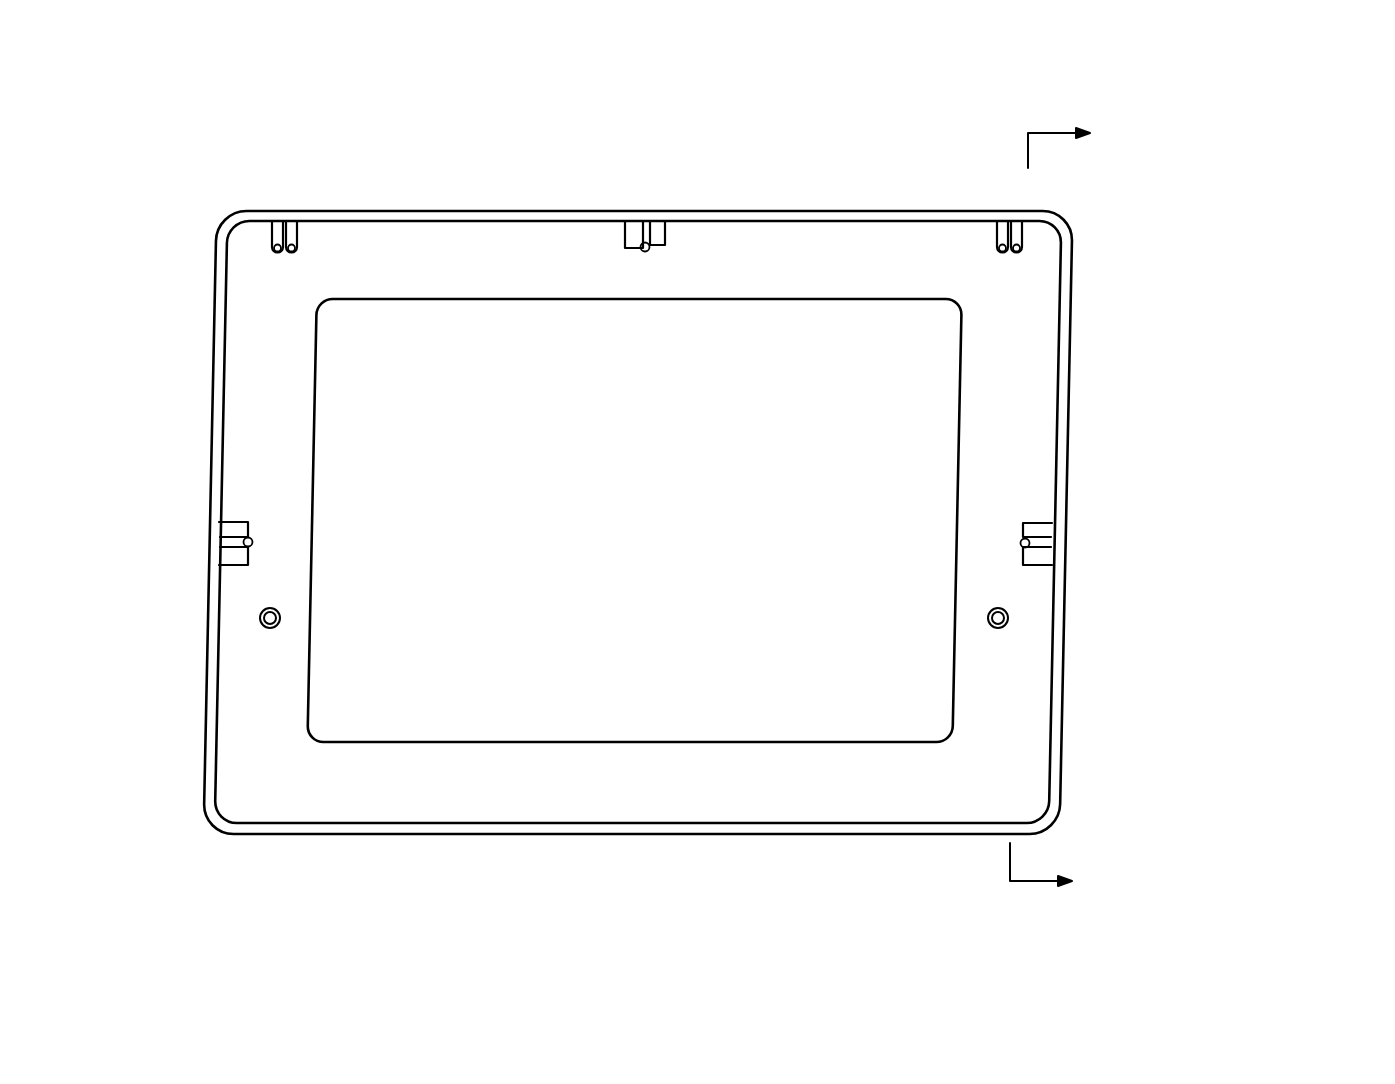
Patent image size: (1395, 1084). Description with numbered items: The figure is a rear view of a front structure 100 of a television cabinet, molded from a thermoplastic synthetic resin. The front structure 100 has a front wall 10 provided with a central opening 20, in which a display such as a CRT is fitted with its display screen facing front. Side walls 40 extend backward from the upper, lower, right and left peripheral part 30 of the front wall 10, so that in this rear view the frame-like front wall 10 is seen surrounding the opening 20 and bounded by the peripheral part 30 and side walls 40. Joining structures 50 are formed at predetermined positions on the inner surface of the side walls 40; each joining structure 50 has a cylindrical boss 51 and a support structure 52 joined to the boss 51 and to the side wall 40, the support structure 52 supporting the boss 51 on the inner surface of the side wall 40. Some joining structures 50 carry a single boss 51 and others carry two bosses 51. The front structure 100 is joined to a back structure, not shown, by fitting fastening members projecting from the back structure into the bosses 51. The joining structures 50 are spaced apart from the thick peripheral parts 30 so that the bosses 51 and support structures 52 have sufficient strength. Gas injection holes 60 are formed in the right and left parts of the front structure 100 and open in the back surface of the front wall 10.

The front structure 100 is at (598, 187).
The front wall 10 is at (897, 257).
The central opening 20 is at (812, 300).
The peripheral part 30 is at (495, 218).
The side wall 40 is at (1070, 350).
The joining structure 50 is at (764, 95).
The cylindrical boss 51 is at (650, 252).
The support structure 52 is at (668, 237).
The gas injection hole 60 is at (262, 626).